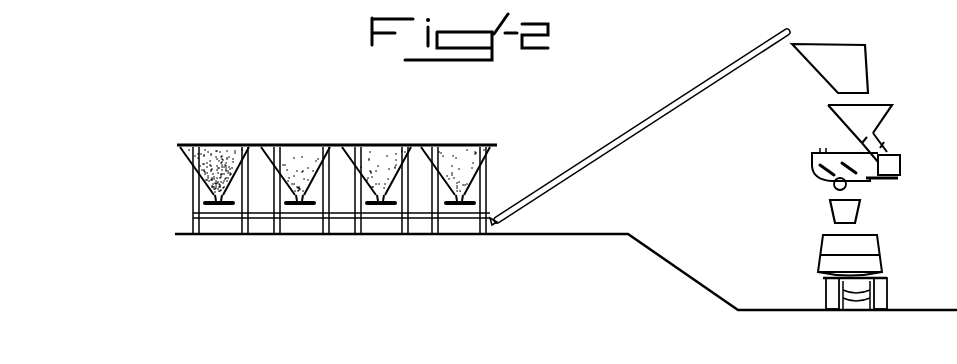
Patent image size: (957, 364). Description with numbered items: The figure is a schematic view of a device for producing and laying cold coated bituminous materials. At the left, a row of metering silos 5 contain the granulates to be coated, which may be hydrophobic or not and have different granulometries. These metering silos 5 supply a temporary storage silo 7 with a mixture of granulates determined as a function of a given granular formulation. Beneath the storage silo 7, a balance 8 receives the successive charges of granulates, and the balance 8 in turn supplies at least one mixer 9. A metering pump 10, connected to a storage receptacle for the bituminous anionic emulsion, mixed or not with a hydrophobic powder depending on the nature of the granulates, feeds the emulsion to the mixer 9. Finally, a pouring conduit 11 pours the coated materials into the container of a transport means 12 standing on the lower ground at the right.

The metering silos 5 is at (378, 145).
The temporary storage silo 7 is at (870, 60).
The balance 8 is at (892, 108).
The mixer 9 is at (810, 160).
The metering pump 10 is at (900, 160).
The pouring conduit 11 is at (863, 207).
The transport means 12 is at (882, 262).